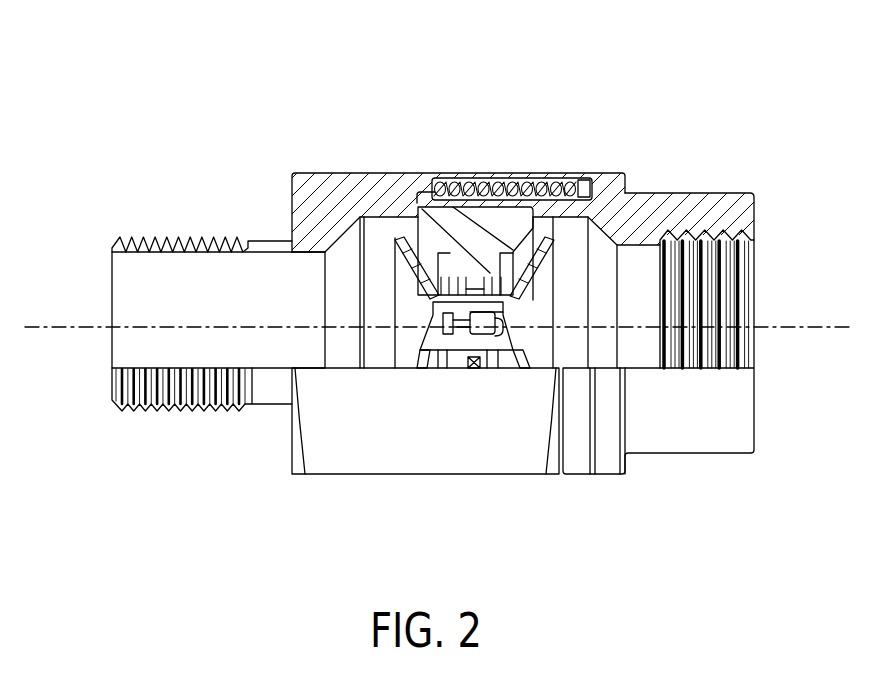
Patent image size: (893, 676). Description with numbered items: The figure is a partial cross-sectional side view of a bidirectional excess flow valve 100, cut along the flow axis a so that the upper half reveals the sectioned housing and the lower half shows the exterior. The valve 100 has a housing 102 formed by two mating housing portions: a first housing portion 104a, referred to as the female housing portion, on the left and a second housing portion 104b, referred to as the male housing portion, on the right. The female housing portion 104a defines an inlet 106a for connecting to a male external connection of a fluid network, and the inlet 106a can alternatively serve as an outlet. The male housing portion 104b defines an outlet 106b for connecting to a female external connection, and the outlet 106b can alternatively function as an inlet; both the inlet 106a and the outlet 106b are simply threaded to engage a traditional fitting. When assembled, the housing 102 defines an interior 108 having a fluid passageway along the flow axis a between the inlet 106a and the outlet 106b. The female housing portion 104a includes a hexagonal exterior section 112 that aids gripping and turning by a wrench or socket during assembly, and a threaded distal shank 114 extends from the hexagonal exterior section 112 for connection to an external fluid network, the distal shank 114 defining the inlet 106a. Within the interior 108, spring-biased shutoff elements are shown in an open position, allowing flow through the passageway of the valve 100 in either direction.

The bidirectional excess flow valve 100 is at (206, 90).
The housing 102 is at (484, 177).
The first housing portion 104a is at (294, 172).
The second housing portion 104b is at (688, 193).
The inlet 106a is at (110, 265).
The outlet 106b is at (754, 273).
The interior 108 is at (288, 347).
The hexagonal exterior section 112 is at (382, 476).
The threaded distal shank 114 is at (147, 413).